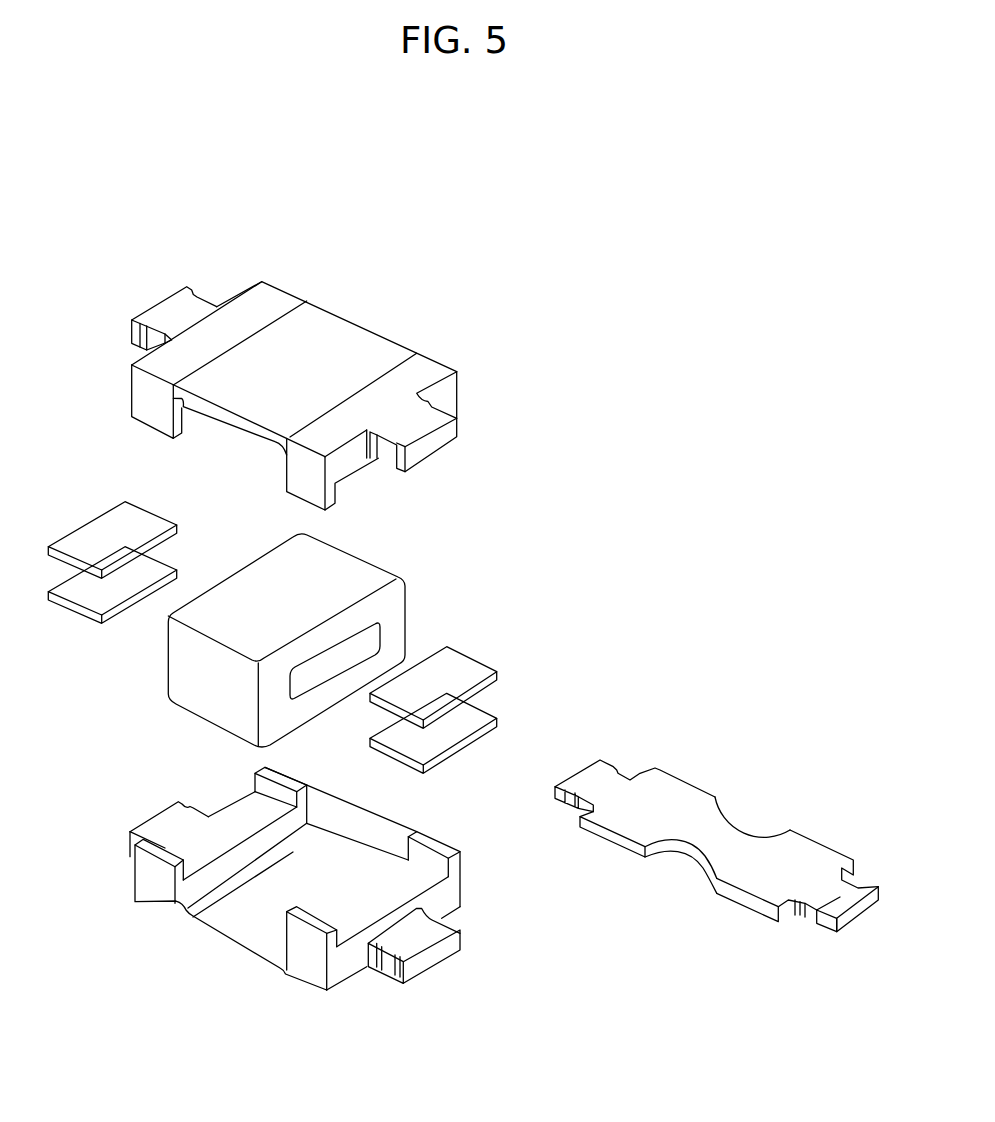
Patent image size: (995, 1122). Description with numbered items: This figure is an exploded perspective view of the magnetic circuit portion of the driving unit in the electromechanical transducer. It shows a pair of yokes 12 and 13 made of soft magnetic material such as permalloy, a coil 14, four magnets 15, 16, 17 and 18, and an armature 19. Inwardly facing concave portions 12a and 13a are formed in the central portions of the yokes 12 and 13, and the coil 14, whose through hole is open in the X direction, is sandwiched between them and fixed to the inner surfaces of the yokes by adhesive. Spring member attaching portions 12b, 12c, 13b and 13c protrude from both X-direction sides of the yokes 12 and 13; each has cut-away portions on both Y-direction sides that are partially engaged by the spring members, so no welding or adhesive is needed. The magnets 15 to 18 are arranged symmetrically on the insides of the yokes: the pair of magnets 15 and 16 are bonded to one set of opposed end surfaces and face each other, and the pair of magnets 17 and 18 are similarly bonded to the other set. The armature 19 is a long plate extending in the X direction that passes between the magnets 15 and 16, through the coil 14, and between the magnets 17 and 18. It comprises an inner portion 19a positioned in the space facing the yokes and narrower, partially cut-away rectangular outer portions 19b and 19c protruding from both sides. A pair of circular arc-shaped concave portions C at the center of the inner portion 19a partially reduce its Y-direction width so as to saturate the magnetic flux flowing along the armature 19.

The yoke 12 is at (232, 950).
The concave portion 12a is at (350, 857).
The spring member attaching portion 12b is at (427, 935).
The spring member attaching portion 12c is at (166, 823).
The yoke 13 is at (328, 350).
The concave portion 13a is at (237, 430).
The spring member attaching portion 13b is at (412, 433).
The spring member attaching portion 13c is at (163, 315).
The coil 14 is at (202, 680).
The magnet 15 is at (468, 742).
The magnet 16 is at (468, 697).
The magnet 17 is at (67, 606).
The magnet 18 is at (65, 559).
The armature 19 is at (683, 808).
The inner portion 19a is at (628, 847).
The outer portion 19b is at (823, 924).
The outer portion 19c is at (564, 801).
The concave portion C is at (686, 852).